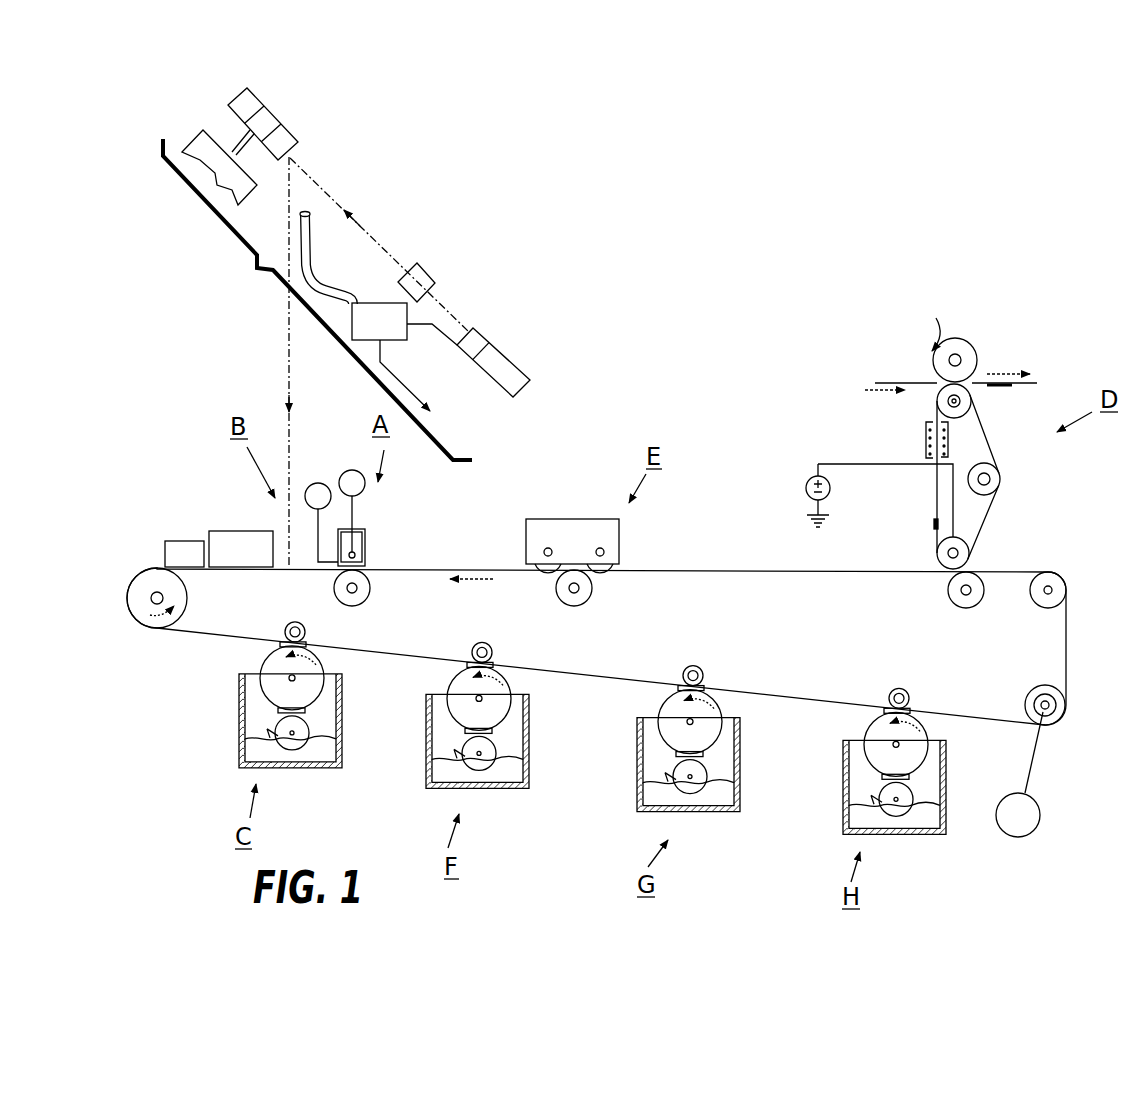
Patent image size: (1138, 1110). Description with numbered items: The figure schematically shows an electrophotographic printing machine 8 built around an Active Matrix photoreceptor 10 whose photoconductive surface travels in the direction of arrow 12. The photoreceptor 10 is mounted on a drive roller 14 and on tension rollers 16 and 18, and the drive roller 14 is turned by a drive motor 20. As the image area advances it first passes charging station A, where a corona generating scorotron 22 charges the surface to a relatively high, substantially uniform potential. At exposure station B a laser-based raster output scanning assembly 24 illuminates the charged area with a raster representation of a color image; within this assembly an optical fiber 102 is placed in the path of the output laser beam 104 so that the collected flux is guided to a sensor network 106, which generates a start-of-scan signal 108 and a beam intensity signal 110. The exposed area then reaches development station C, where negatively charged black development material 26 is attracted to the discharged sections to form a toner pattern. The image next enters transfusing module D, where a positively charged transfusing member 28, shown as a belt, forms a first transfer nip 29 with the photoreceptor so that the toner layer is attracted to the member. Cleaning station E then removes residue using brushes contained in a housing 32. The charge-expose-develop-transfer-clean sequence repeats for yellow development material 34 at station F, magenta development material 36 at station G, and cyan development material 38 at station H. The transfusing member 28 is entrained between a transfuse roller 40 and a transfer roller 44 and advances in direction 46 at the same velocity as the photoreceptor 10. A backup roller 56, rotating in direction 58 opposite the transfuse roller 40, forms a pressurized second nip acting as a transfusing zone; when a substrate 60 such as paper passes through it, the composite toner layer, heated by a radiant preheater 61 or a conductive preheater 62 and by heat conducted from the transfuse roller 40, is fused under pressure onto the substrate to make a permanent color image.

The electrophotographic printing machine 8 is at (880, 240).
The photoreceptor 10 is at (773, 570).
The arrow 12 is at (470, 577).
The drive roller 14 is at (1060, 712).
The tension roller 16 is at (135, 578).
The tension roller 18 is at (1064, 578).
The drive motor 20 is at (1033, 835).
The corona generating scorotron 22 is at (419, 503).
The raster output scanning assembly 24 is at (248, 272).
The development material 26 is at (296, 770).
The transfusing member 28 is at (1005, 488).
The first transfer nip 29 is at (987, 556).
The housing 32 is at (560, 526).
The second development material 34 is at (483, 792).
The third development material 36 is at (691, 815).
The fourth development material 38 is at (900, 838).
The transfuse roller 40 is at (937, 403).
The transfer roller 44 is at (947, 551).
The direction 46 is at (982, 441).
The backup roller 56 is at (964, 350).
The direction 58 is at (936, 318).
The substrate 60 is at (893, 382).
The radiant preheater 61 is at (926, 441).
The conductive preheater 62 is at (949, 441).
The optical fiber 102 is at (313, 240).
The output laser beam 104 is at (291, 180).
The sensor network 106 is at (393, 318).
The start-of-scan signal 108 is at (421, 400).
The beam intensity signal 110 is at (447, 343).